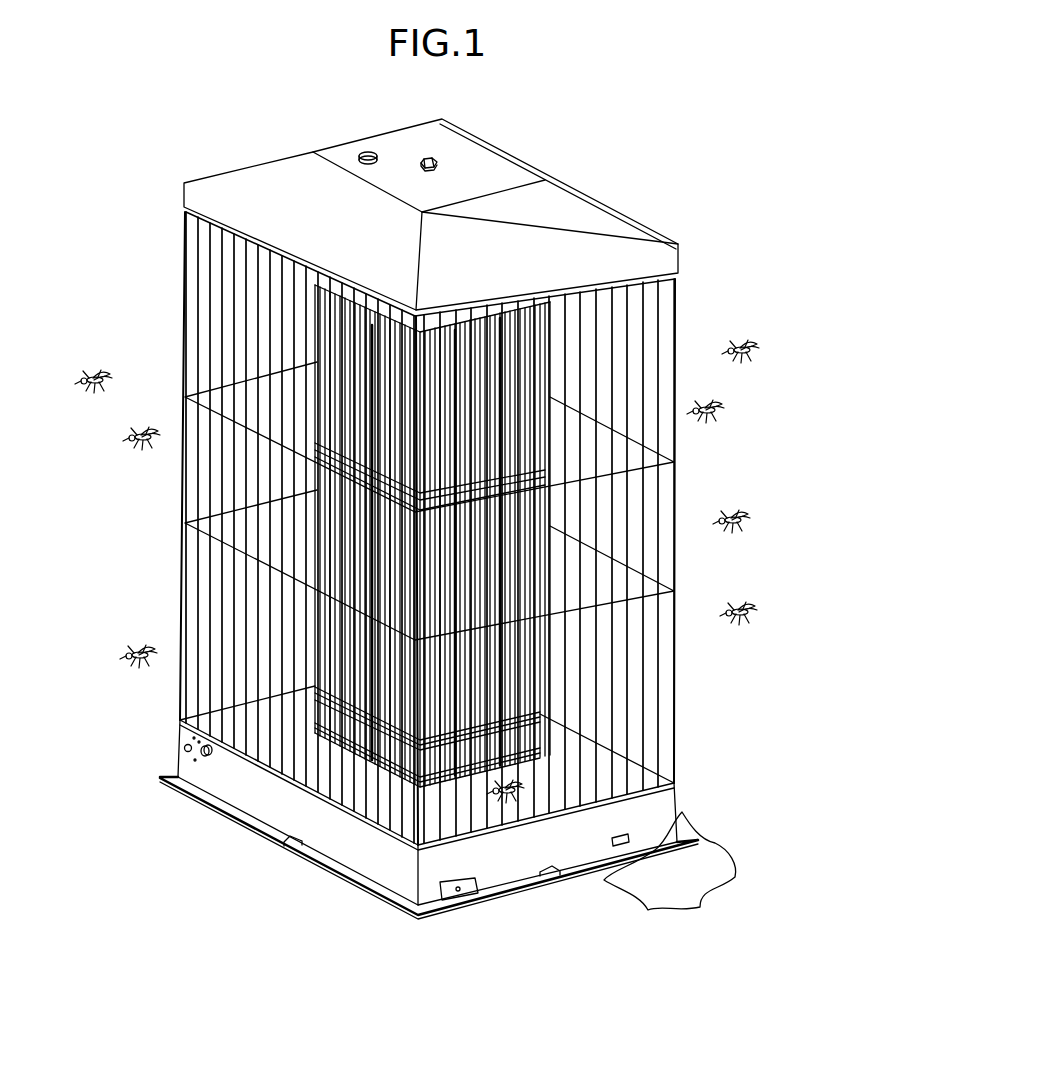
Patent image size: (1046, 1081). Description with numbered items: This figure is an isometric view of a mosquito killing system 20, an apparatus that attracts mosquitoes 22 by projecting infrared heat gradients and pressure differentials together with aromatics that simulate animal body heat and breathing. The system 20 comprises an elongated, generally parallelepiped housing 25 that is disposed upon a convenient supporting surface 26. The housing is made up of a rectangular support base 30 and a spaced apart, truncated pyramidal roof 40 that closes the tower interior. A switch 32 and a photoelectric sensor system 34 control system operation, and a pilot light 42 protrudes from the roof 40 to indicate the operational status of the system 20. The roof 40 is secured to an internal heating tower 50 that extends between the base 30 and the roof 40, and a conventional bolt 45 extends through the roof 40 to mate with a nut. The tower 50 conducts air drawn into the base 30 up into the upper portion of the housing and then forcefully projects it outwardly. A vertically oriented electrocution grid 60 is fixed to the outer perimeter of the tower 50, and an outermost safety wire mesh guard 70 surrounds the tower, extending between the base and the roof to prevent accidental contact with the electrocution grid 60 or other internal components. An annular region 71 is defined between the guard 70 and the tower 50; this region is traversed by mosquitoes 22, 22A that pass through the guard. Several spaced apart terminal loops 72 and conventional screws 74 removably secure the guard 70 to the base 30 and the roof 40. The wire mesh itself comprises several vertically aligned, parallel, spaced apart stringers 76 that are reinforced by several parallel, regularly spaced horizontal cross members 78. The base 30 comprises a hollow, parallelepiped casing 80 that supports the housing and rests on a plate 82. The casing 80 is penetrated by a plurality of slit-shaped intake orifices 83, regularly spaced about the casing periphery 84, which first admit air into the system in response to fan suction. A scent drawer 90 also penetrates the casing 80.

The mosquito killing system 20 is at (630, 120).
The mosquitoes 22 is at (97, 397).
The mosquito 22A is at (509, 805).
The housing 25 is at (692, 513).
The supporting surface 26 is at (712, 842).
The support base 30 is at (350, 898).
The switch 32 is at (183, 748).
The photoelectric sensor system 34 is at (207, 760).
The roof 40 is at (538, 152).
The pilot light 42 is at (367, 149).
The bolt 45 is at (442, 162).
The heating tower 50 is at (445, 305).
The electrocution grid 60 is at (372, 325).
The safety wire mesh guard 70 is at (694, 716).
The annular region 71 is at (655, 688).
The terminal loops 72 is at (312, 265).
The screws 74 is at (312, 256).
The stringers 76 is at (250, 238).
The horizontal cross members 78 is at (185, 210).
The casing 80 is at (250, 805).
The plate 82 is at (330, 855).
The intake orifices 83 is at (290, 843).
The casing periphery 84 is at (620, 838).
The scent drawer 90 is at (474, 896).